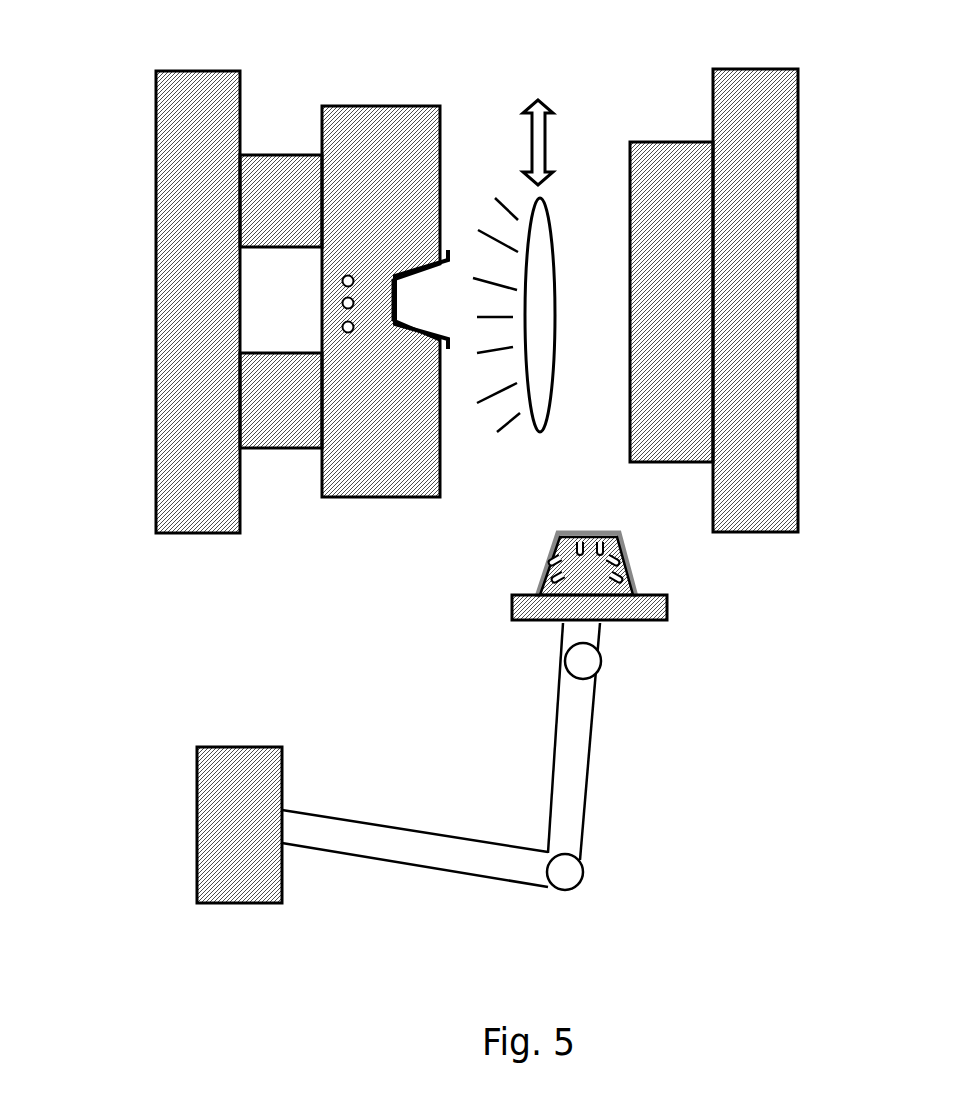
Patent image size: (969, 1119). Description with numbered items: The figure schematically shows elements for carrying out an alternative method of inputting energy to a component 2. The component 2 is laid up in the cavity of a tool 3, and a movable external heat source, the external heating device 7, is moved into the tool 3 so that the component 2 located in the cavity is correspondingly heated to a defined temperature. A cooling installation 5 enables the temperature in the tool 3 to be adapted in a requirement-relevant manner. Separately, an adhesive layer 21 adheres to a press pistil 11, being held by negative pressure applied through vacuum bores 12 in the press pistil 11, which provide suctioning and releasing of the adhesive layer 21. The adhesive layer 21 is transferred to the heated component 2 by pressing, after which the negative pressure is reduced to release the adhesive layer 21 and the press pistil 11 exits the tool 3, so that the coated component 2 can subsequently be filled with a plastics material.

The component 2 is at (448, 250).
The tool 3 is at (377, 137).
The cooling installation 5 is at (342, 300).
The external heating device 7 is at (533, 373).
The press pistil 11 is at (620, 607).
The vacuum bores 12 is at (550, 576).
The adhesive layer 21 is at (628, 572).